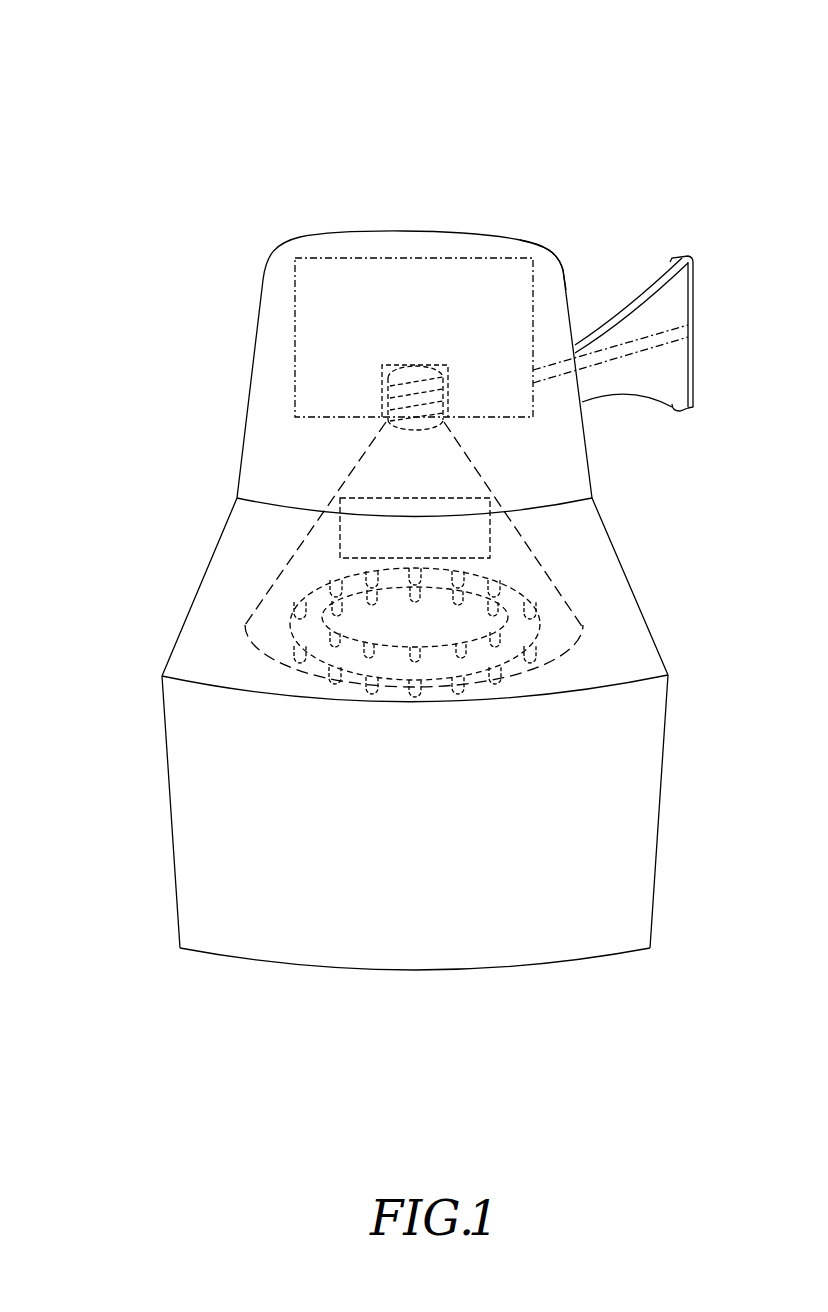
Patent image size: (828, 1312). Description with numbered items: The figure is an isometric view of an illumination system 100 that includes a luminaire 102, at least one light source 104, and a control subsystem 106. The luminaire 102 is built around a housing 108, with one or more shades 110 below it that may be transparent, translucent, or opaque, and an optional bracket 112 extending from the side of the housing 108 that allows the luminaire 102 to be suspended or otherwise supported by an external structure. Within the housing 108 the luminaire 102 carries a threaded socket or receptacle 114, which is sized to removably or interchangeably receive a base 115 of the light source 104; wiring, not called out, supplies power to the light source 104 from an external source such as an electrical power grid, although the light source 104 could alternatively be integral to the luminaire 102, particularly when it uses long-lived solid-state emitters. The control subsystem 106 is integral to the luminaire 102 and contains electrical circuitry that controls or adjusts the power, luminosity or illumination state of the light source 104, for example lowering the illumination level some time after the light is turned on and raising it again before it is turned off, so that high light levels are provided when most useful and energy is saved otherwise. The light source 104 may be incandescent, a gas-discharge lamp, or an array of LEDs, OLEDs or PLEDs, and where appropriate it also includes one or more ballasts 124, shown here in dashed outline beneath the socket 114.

The illumination system 100 is at (198, 83).
The luminaire 102 is at (123, 293).
The light source 104 is at (290, 563).
The control subsystem 106 is at (327, 258).
The housing 108 is at (565, 275).
The shade 110 is at (170, 813).
The bracket 112 is at (677, 372).
The threaded socket 114 is at (445, 393).
The base 115 is at (383, 381).
The ballast 124 is at (490, 530).